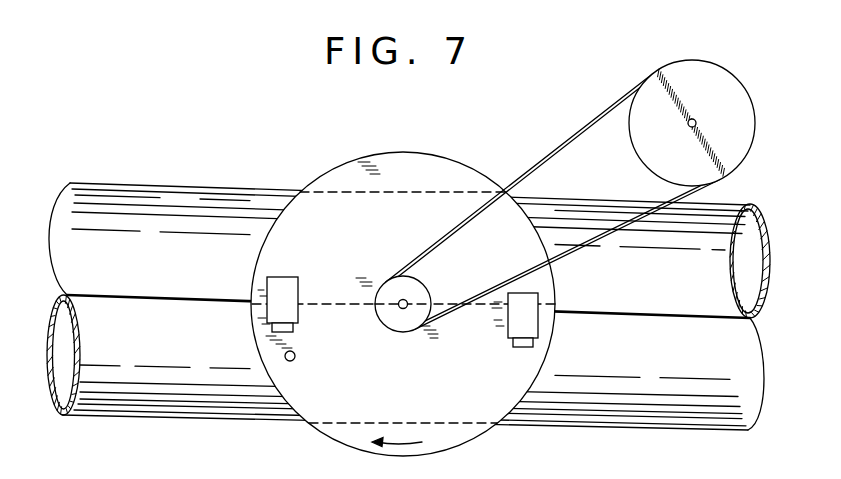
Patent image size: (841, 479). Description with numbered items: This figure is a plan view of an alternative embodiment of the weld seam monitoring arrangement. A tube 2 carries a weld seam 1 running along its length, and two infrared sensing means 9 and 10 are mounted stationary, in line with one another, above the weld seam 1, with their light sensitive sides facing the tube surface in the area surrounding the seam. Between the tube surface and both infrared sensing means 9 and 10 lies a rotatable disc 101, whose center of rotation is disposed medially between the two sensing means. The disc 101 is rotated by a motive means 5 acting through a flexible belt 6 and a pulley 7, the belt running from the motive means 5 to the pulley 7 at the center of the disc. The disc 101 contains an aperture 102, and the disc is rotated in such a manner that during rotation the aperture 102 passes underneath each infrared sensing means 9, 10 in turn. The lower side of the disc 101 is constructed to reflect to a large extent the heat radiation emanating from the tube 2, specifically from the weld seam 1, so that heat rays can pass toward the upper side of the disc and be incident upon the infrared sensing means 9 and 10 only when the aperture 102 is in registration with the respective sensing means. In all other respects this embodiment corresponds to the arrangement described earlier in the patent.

The weld seam 1 is at (124, 300).
The tube 2 is at (655, 410).
The motive means 5 is at (667, 73).
The flexible belt 6 is at (583, 127).
The pulley 7 is at (389, 293).
The infrared sensing means 9 is at (273, 312).
The infrared sensing means 10 is at (513, 323).
The rotatable disc 101 is at (405, 165).
The aperture 102 is at (295, 361).